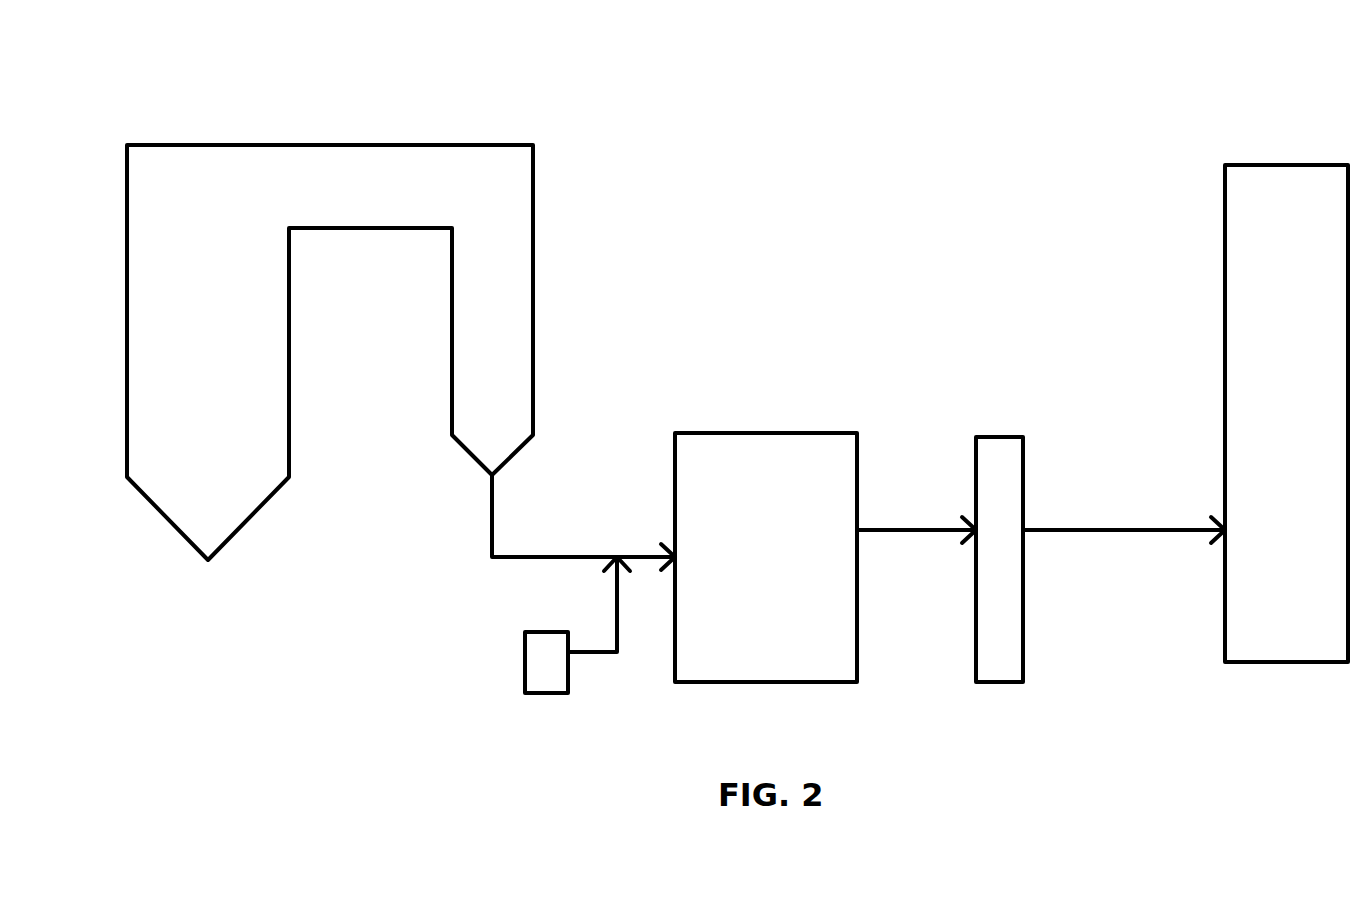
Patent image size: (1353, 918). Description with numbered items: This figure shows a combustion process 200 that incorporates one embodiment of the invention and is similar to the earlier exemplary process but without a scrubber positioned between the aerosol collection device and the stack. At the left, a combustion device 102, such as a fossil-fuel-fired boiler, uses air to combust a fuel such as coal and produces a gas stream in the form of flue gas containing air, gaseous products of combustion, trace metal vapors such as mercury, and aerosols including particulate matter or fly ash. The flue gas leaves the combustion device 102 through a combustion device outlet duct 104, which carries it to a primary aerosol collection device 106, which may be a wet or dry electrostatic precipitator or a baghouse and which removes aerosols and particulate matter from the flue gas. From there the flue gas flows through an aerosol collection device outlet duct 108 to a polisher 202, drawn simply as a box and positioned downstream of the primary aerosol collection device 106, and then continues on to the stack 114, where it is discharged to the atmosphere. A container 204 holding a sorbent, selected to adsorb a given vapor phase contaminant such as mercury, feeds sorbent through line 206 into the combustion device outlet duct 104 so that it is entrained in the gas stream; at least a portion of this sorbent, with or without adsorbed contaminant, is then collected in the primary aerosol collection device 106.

The combustion process 200 is at (828, 108).
The combustion device 102 is at (328, 143).
The combustion device outlet duct 104 is at (490, 497).
The primary aerosol collection device 106 is at (737, 431).
The aerosol collection device outlet duct 108 is at (878, 533).
The stack 114 is at (1223, 332).
The polisher 202 is at (1025, 633).
The container 204 is at (525, 661).
The additive feed line 206 is at (590, 654).